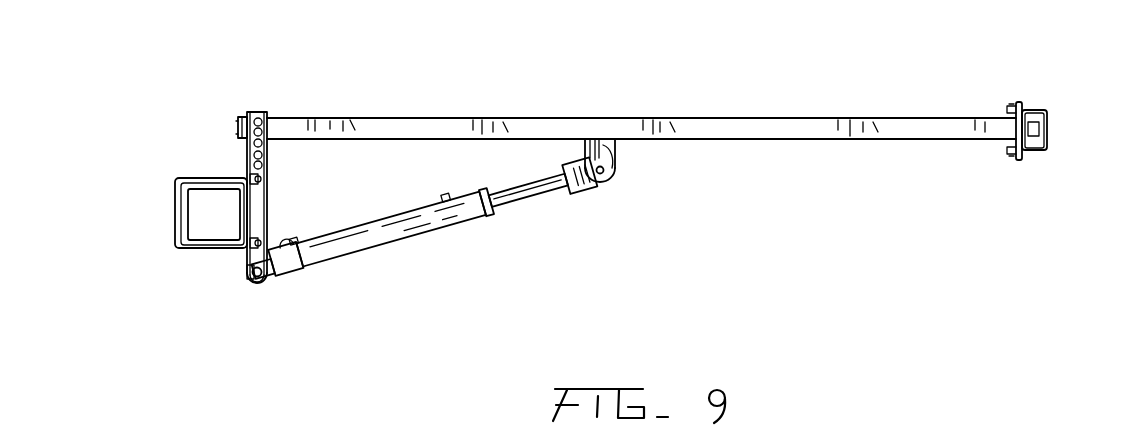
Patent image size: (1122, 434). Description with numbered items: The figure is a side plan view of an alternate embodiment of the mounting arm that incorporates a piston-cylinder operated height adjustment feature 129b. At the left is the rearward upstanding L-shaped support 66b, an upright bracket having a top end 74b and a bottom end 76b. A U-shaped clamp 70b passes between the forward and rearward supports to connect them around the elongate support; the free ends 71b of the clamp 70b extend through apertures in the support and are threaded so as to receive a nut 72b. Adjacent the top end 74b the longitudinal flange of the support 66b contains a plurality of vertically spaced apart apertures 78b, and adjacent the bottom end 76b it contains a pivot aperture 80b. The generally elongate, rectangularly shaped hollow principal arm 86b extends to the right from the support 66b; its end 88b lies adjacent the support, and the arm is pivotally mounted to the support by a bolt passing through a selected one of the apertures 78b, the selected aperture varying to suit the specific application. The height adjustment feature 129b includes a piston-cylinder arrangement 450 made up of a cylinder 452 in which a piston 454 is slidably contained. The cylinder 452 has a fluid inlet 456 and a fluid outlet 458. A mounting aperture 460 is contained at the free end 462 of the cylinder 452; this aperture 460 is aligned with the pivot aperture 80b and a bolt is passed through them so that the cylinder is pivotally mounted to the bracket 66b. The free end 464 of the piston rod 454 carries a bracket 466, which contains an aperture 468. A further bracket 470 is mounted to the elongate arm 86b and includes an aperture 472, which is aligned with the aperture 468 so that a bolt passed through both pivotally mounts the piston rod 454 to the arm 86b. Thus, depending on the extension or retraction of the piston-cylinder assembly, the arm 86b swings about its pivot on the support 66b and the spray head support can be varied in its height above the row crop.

The rearward upstanding L-shaped support 66b is at (268, 168).
The U-shaped clamp 70b is at (196, 248).
The free end of clamp 71b is at (268, 247).
The nut 72b is at (257, 238).
The top end 74b is at (258, 112).
The bottom end 76b is at (257, 284).
The vertically spaced apart apertures 78b is at (250, 153).
The pivot aperture 80b is at (268, 270).
The principal arm 86b is at (755, 130).
The end of principal arm 88b is at (238, 127).
The piston-cylinder operated height adjustment feature 129b is at (474, 270).
The piston-cylinder arrangement 450 is at (399, 264).
The cylinder 452 is at (358, 233).
The piston 454 is at (543, 178).
The fluid inlet 456 is at (310, 247).
The fluid outlet 458 is at (445, 194).
The mounting aperture 460 is at (250, 283).
The free end of cylinder 462 is at (245, 272).
The free end of piston rod 464 is at (563, 193).
The bracket 466 is at (613, 178).
The aperture 468 is at (600, 178).
The bracket 470 is at (605, 147).
The aperture 472 is at (612, 172).